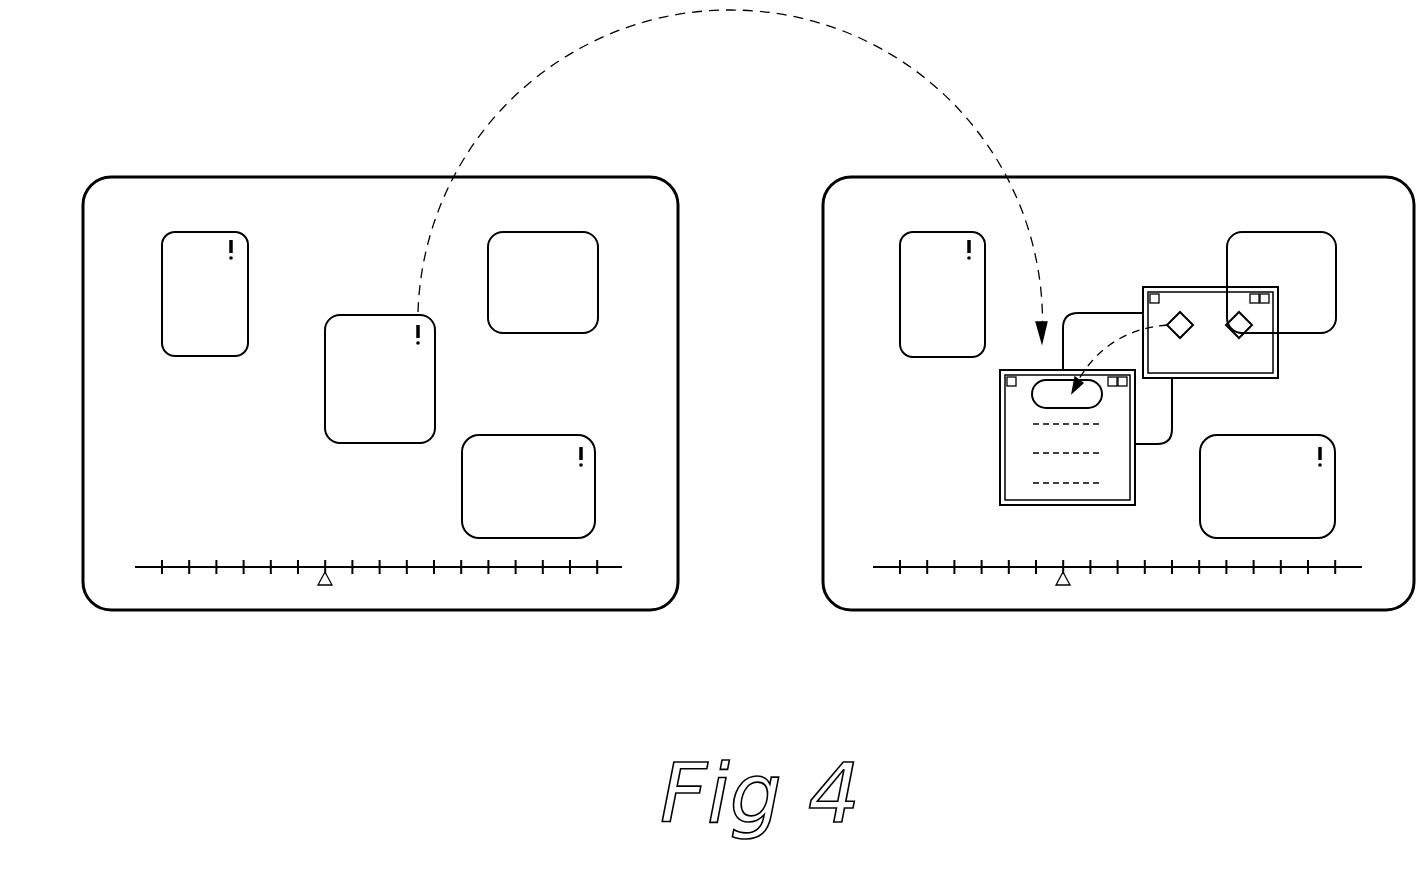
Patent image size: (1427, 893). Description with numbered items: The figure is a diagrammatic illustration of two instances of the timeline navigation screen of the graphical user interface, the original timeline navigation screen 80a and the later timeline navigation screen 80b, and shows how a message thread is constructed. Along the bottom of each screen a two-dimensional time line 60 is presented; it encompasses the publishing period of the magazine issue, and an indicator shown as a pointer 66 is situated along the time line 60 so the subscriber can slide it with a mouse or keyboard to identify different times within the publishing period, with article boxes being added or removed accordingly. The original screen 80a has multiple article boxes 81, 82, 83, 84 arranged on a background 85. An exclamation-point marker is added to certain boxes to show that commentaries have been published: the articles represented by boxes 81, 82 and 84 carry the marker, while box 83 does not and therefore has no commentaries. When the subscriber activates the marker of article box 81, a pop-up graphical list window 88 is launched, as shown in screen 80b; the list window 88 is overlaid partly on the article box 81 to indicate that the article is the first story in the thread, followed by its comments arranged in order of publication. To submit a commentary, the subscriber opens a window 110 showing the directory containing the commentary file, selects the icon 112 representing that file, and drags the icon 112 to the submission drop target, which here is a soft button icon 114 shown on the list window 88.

The time line 60 is at (552, 586).
The pointer 66 is at (325, 590).
The original timeline navigation screen 80a is at (366, 165).
The timeline navigation screen 80b is at (1106, 165).
The article box 81 is at (380, 430).
The article box 82 is at (202, 340).
The article box 83 is at (530, 320).
The article box 84 is at (582, 500).
The background 85 is at (318, 207).
The pop-up graphical list window 88 is at (1017, 438).
The window 110 is at (1222, 358).
The icon 112 is at (1182, 318).
The soft button icon 114 is at (1045, 397).